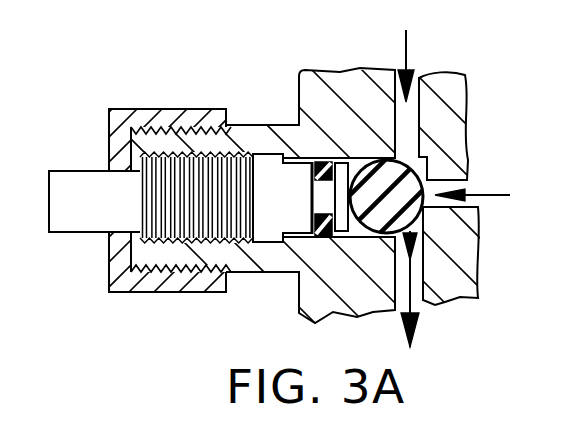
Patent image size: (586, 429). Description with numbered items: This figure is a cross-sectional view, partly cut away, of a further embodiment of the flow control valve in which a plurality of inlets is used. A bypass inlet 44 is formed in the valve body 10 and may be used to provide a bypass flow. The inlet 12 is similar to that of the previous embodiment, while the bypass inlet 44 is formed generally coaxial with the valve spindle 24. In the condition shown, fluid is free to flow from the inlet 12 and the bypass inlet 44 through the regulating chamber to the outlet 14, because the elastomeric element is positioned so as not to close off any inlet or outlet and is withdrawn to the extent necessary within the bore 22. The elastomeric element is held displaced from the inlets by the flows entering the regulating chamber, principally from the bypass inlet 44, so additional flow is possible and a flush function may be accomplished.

The valve body 10 is at (341, 72).
The inlet 12 is at (410, 122).
The outlet 14 is at (418, 299).
The bore 22 is at (332, 160).
The valve spindle 24 is at (278, 178).
The bypass inlet 44 is at (450, 178).